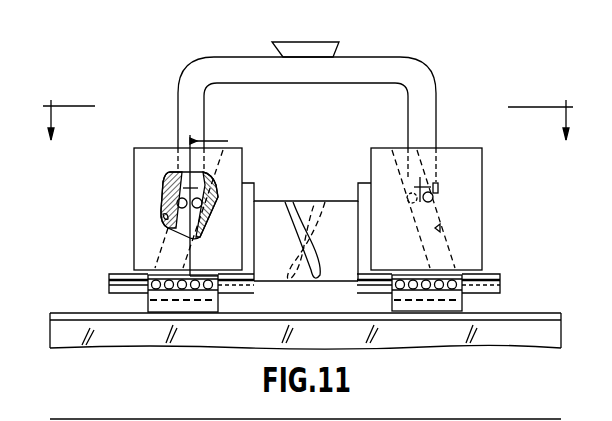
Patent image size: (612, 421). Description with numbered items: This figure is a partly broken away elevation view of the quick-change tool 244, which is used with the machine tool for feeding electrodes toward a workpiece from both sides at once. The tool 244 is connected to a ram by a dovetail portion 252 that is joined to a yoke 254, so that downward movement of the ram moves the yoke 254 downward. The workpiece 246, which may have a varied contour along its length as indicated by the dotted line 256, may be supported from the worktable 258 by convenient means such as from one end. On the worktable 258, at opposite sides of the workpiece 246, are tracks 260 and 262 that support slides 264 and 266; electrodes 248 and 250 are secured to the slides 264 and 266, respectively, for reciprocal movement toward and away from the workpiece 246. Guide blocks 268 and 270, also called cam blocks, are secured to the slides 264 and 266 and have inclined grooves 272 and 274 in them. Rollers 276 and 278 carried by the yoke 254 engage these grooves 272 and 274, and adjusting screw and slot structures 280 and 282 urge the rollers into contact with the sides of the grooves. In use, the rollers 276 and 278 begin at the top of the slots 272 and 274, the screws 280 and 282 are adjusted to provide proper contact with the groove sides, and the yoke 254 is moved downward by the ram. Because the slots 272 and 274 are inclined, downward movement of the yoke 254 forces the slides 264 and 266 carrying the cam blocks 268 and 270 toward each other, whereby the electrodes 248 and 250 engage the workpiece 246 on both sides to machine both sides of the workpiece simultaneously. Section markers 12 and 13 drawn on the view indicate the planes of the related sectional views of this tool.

The cartridge assembly 244 is at (498, 45).
The first leaf spring 246 is at (285, 202).
The center block 248 is at (272, 281).
The second leaf spring 250 is at (325, 202).
The top mounting block 252 is at (339, 50).
The arch bracket 254 is at (238, 57).
The spring arm 256 is at (315, 202).
The base plate 258 is at (87, 313).
The left bearing block 260 is at (160, 313).
The right bearing block 262 is at (417, 311).
The left support plate 264 is at (120, 275).
The right support plate 266 is at (501, 288).
The left housing 268 is at (134, 171).
The right housing 270 is at (484, 172).
The rollers 272 is at (163, 220).
The roller 274 is at (441, 228).
The cam member 276 is at (165, 204).
The roller 278 is at (428, 205).
The pivot bar 280 is at (180, 173).
The stop block 282 is at (438, 188).
The section line 12- 12 is at (212, 196).
The section line 13- 13 is at (310, 121).